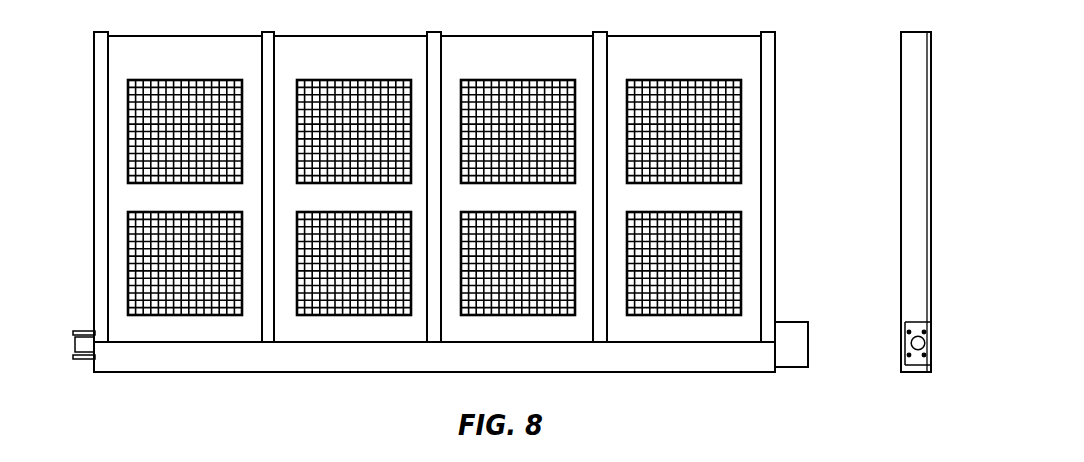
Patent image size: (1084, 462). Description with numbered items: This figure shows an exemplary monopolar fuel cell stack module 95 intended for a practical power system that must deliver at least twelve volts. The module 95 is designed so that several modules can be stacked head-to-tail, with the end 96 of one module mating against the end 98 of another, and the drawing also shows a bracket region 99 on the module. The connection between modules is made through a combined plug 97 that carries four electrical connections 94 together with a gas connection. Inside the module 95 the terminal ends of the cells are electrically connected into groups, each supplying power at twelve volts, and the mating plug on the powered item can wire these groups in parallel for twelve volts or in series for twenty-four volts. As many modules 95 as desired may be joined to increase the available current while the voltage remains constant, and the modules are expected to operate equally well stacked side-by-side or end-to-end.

The monopolar fuel cell stack module 95 is at (790, 36).
The end of module 98 is at (775, 245).
The mounting bracket 99 is at (791, 368).
The end of module 96 is at (84, 360).
The electrical connections 94 is at (907, 330).
The combined plug 97 is at (908, 346).